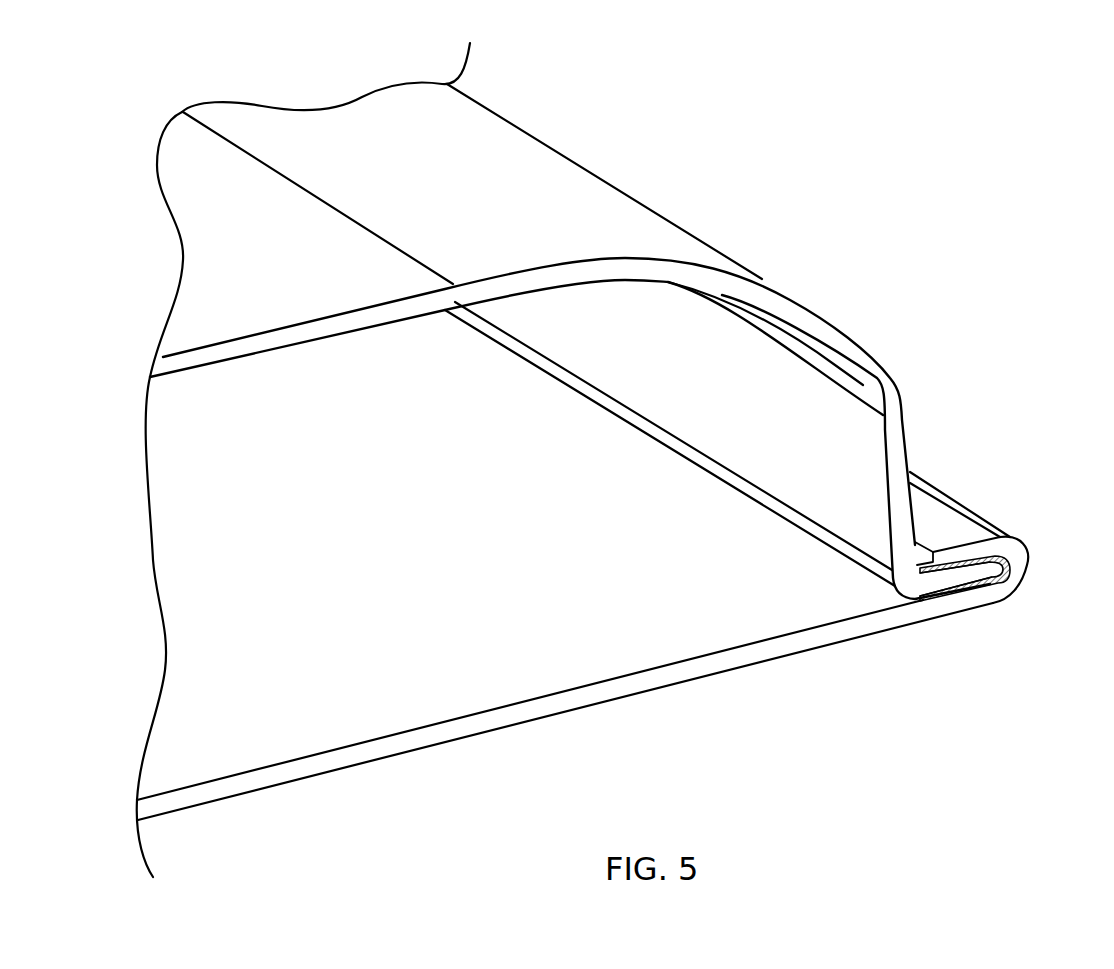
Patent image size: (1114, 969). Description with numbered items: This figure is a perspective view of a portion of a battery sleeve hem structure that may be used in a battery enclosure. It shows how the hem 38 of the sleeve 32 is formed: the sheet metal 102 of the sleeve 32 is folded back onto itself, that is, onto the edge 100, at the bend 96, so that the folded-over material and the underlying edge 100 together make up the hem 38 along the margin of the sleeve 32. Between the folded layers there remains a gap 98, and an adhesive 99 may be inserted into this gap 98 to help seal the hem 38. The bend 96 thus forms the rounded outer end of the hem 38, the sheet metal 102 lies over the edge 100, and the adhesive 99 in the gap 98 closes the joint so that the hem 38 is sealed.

The sleeve 32 is at (637, 228).
The hem 38 is at (944, 438).
The bend 96 is at (1042, 570).
The gap 98 is at (987, 588).
The adhesive 99 is at (1028, 557).
The edge 100 is at (967, 576).
The sheet metal 102 is at (965, 553).